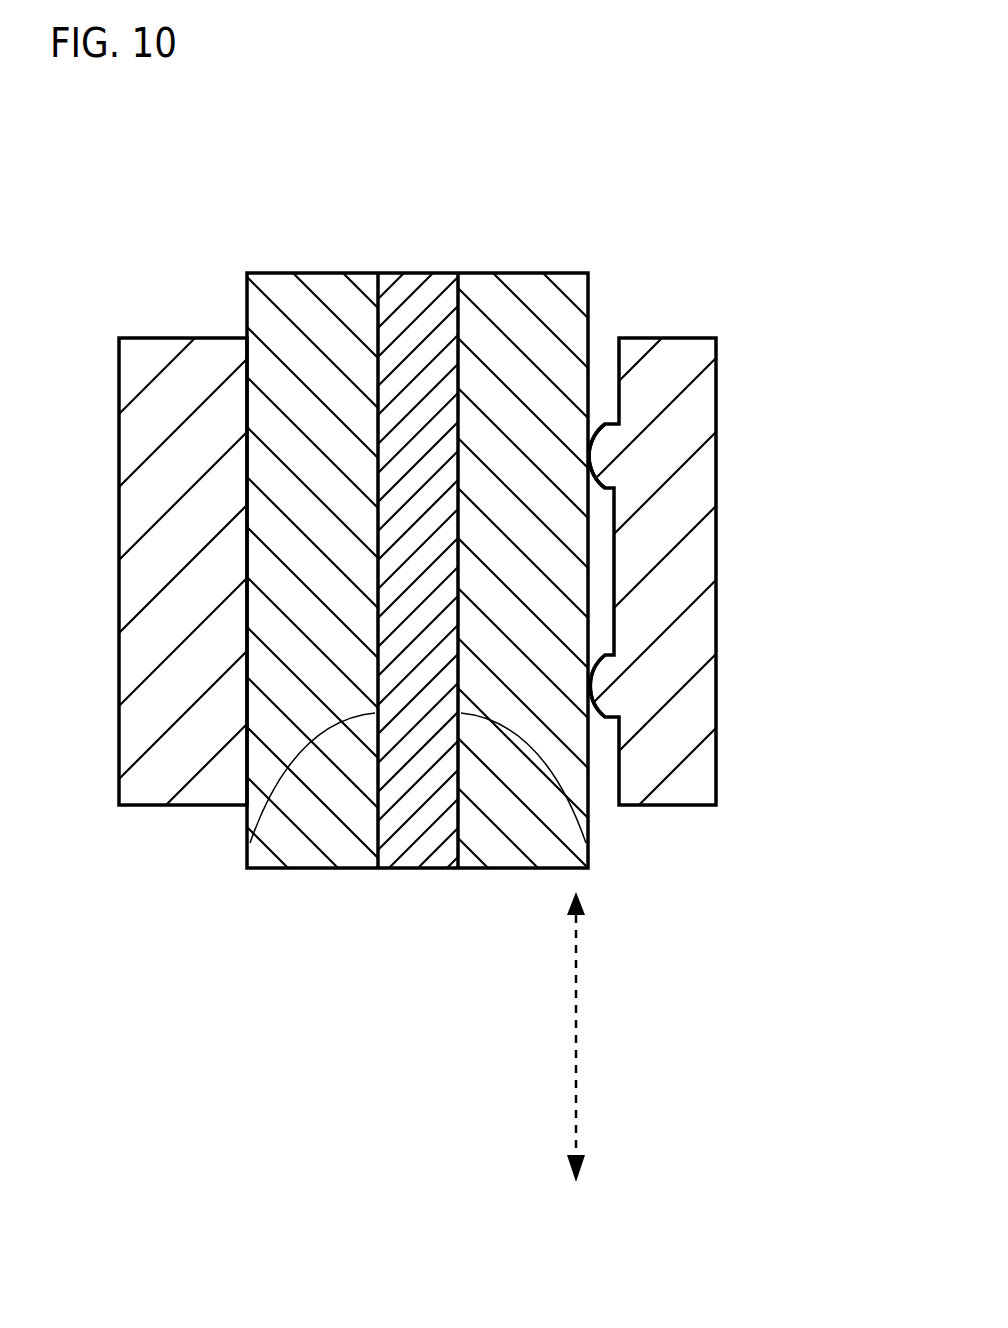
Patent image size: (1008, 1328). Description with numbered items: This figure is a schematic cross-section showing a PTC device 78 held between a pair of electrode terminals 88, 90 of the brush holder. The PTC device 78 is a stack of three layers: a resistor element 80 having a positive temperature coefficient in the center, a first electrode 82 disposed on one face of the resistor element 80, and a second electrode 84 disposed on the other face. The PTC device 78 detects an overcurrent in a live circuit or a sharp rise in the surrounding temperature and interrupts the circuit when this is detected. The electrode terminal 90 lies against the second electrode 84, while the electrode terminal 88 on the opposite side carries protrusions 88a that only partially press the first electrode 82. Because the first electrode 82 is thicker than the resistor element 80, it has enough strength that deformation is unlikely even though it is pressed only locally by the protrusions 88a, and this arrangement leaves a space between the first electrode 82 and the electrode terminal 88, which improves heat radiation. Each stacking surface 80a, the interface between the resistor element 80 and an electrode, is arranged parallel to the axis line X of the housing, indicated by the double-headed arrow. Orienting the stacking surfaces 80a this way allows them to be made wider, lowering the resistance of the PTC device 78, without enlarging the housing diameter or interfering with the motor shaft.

The PTC device 78 is at (443, 194).
The resistor element 80 is at (418, 272).
The stacking surface 80a is at (250, 843).
The first electrode 82 is at (522, 272).
The second electrode 84 is at (317, 272).
The electrode terminal 88 is at (667, 336).
The protrusion 88a is at (603, 456).
The electrode terminal 90 is at (187, 338).
The axis line X is at (589, 1037).